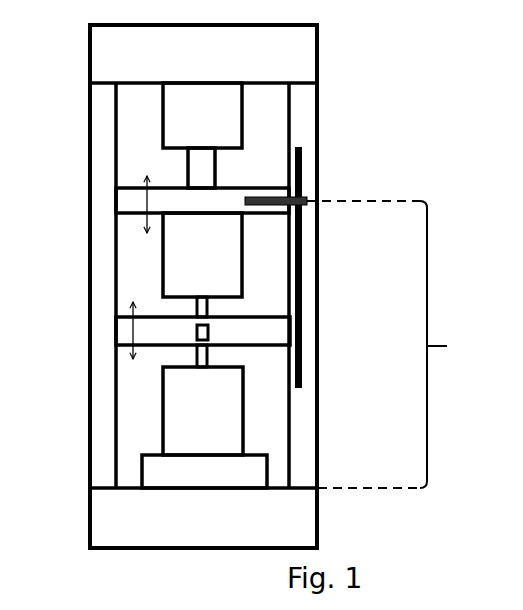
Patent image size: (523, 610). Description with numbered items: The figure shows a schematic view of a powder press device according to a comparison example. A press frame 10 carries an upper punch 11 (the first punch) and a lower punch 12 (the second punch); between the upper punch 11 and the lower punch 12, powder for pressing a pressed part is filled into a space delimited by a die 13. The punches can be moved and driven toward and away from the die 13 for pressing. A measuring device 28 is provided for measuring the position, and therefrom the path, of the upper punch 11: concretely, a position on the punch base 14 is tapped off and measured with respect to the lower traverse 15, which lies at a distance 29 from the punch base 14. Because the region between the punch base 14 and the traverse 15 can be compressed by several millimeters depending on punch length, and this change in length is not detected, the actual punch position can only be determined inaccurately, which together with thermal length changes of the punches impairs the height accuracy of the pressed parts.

The press frame 10 is at (320, 58).
The upper punch 11 is at (208, 308).
The lower punch 12 is at (208, 355).
The die 13 is at (227, 335).
The punch base 14 is at (135, 202).
The traverse 15 is at (288, 522).
The measuring device 28 is at (303, 193).
The distance 29 is at (395, 344).